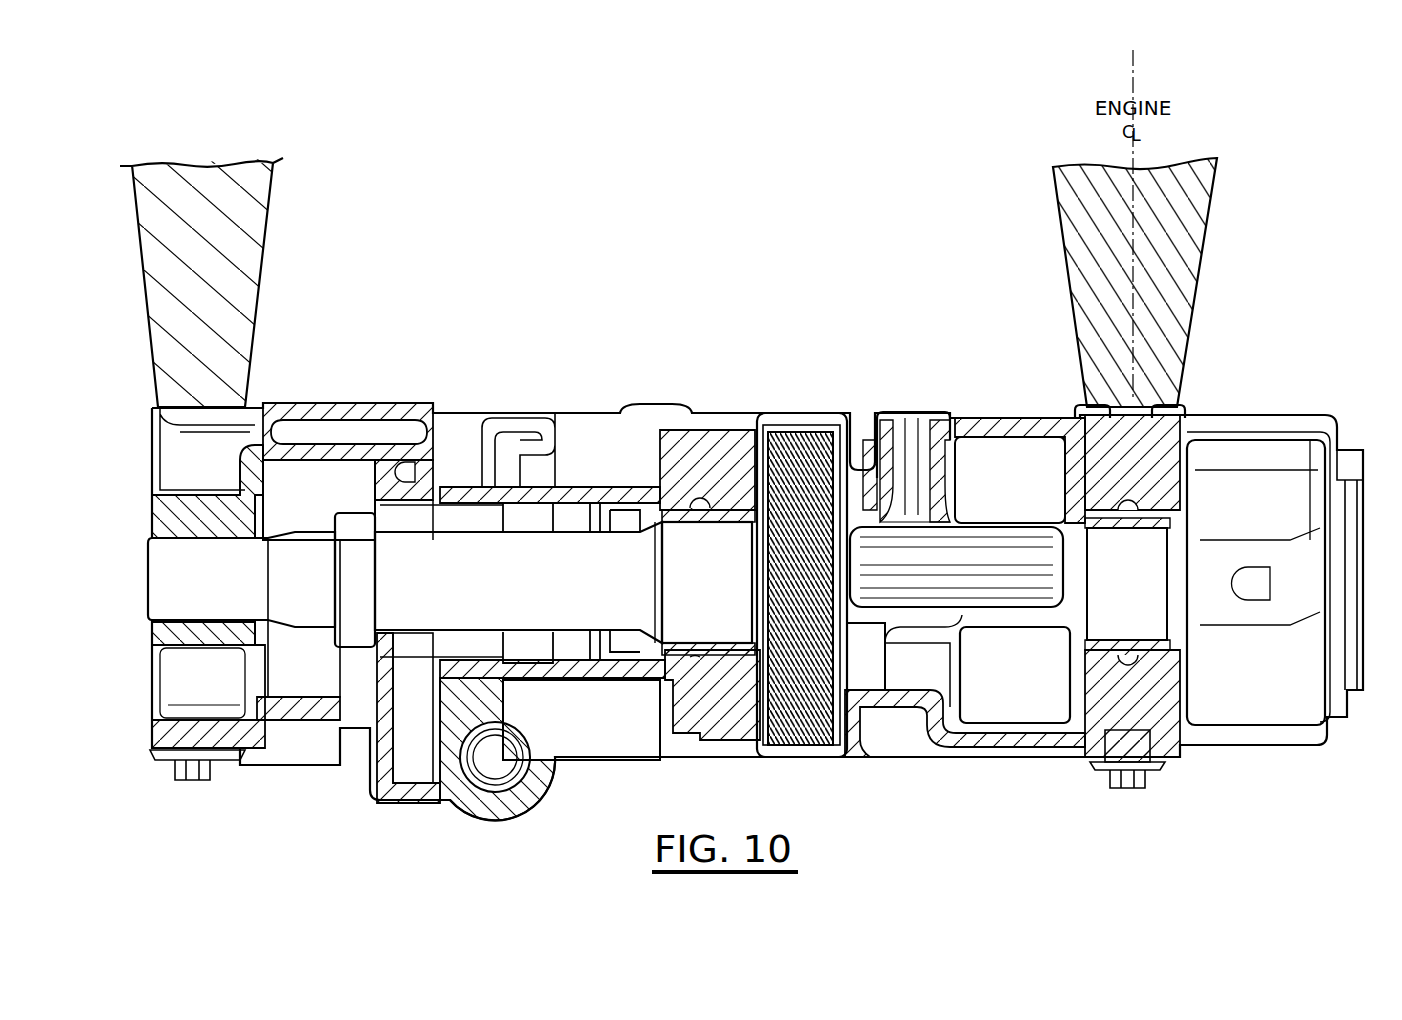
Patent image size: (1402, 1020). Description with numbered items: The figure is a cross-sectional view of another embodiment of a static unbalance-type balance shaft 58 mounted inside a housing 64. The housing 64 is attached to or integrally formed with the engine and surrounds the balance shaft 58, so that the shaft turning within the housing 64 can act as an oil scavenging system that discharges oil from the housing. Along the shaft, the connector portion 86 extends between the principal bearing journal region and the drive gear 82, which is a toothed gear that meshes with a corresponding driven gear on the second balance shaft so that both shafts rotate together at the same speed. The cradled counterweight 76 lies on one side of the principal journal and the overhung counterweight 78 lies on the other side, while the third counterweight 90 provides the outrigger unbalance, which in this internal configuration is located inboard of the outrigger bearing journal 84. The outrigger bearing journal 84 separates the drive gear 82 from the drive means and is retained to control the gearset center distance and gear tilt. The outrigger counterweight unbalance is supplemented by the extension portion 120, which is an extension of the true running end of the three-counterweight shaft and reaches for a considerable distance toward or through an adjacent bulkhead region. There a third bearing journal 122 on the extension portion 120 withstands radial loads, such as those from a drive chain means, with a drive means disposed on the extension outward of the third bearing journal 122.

The balance shaft 58 is at (917, 508).
The housing 64 is at (762, 758).
The cradled counterweight 76 is at (1022, 703).
The overhung counterweight 78 is at (1253, 710).
The drive gear 82 is at (802, 448).
The outrigger bearing journal 84 is at (682, 595).
The connector portion 86 is at (930, 593).
The third counterweight 90 is at (873, 673).
The extension portion 120 is at (474, 601).
The third bearing journal 122 is at (173, 580).